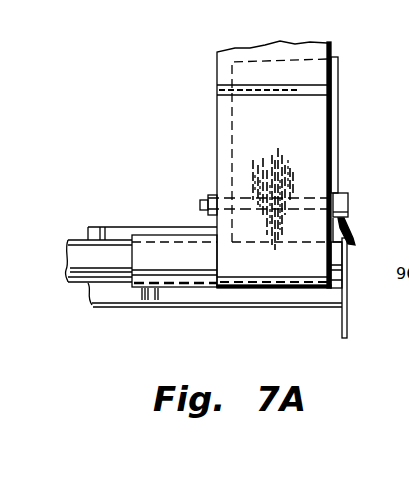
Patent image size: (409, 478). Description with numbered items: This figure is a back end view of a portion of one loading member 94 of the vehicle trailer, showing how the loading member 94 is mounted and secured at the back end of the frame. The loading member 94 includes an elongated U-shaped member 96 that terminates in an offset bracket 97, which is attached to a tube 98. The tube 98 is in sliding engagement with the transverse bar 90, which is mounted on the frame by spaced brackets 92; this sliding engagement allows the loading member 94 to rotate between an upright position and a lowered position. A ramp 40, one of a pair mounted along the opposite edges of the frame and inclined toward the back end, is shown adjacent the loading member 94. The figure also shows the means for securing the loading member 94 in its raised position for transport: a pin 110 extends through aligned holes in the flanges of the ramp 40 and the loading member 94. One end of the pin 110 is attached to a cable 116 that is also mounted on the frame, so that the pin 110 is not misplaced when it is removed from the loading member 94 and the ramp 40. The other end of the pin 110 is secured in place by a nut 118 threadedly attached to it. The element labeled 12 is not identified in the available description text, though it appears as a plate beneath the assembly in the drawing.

The base plate 12 is at (271, 304).
The ramp 40 is at (337, 90).
The transverse bar 90 is at (100, 273).
The bracket 92 is at (347, 322).
The loading member 94 is at (217, 80).
The U-shaped member 96 is at (320, 50).
The offset bracket 97 is at (316, 131).
The tube 98 is at (176, 272).
The pin 110 is at (348, 199).
The cable 116 is at (354, 240).
The nut 118 is at (211, 194).